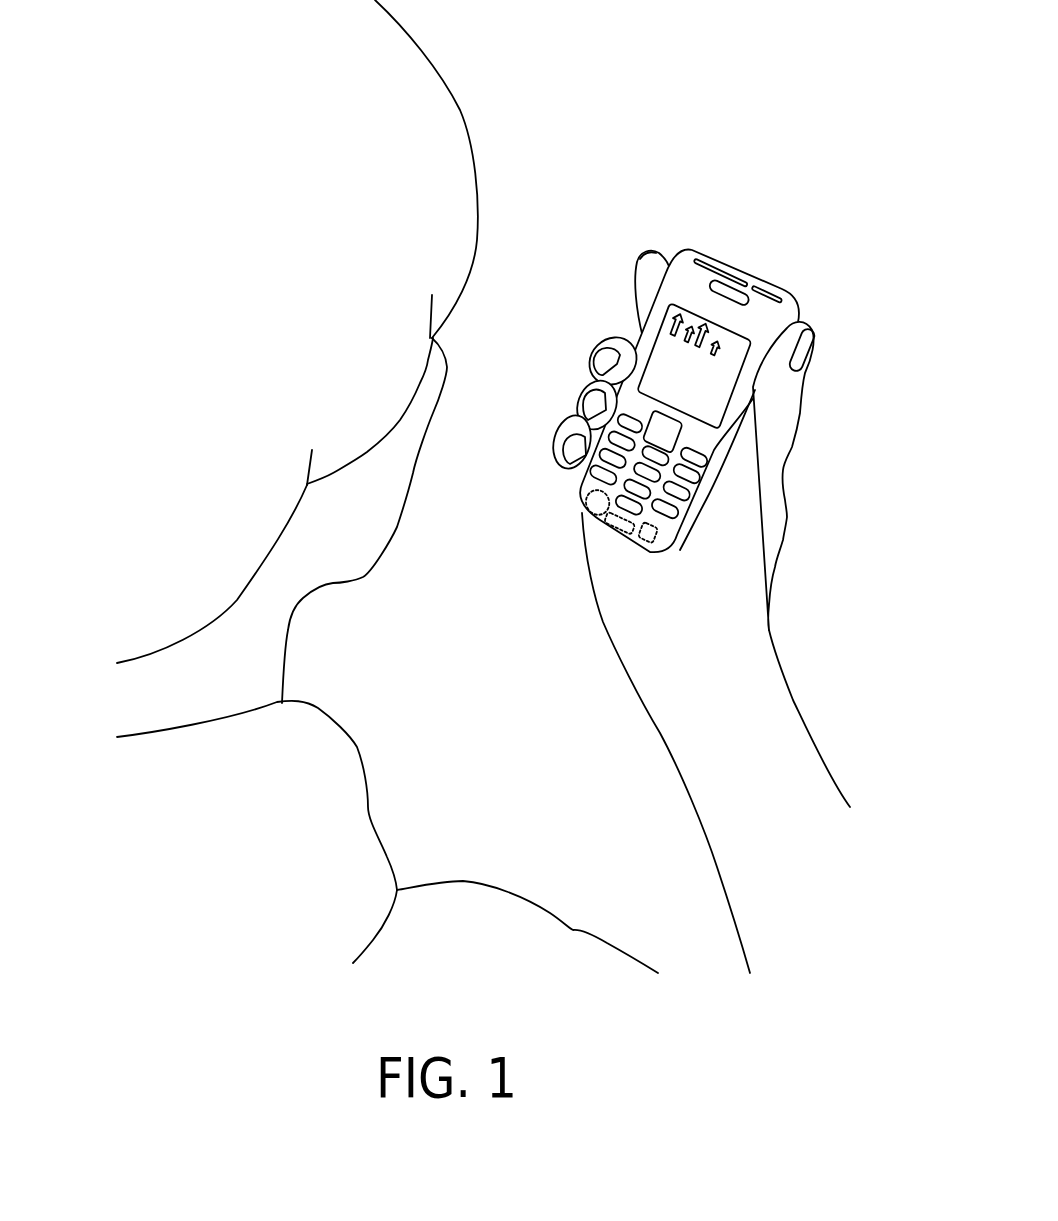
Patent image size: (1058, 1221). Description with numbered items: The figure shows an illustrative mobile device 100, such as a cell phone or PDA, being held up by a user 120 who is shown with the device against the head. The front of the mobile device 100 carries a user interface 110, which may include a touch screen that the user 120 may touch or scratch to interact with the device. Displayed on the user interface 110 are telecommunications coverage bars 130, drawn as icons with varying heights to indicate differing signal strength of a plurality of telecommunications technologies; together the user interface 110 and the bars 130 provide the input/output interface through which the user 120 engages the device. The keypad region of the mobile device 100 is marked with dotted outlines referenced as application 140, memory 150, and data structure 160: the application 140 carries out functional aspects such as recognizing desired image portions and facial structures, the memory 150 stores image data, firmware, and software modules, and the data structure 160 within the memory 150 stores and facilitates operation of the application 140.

The mobile device 100 is at (684, 592).
The user interface 110 is at (653, 338).
The user 120 is at (507, 175).
The telecommunications coverage bars 130 is at (694, 366).
The application 140 is at (585, 503).
The memory 150 is at (614, 533).
The data structure 160 is at (647, 542).